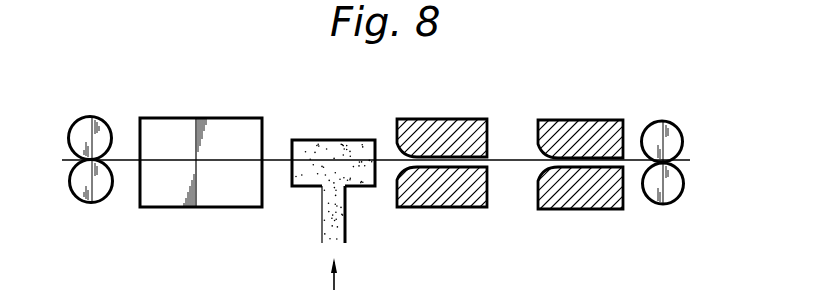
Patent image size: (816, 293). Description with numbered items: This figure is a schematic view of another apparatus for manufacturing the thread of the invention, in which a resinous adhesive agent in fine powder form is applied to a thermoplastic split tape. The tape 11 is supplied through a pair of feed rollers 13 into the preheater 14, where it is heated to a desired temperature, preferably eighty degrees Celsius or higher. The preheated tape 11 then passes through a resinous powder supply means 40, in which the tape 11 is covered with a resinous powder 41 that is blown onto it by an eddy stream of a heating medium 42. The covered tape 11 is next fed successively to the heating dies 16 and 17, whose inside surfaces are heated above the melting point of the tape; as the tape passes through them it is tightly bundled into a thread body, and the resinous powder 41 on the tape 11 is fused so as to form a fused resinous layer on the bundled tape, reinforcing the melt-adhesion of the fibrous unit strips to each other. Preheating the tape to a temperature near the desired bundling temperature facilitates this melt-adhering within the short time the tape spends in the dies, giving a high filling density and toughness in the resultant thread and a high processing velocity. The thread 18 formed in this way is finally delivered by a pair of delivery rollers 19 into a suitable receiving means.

The thermoplastic split tape 11 is at (68, 160).
The feed rollers 13 is at (88, 117).
The preheater 14 is at (220, 127).
The heating die 16 is at (442, 127).
The heating die 17 is at (587, 122).
The thread 18 is at (685, 172).
The delivery rollers 19 is at (655, 123).
The resinous powder supply means 40 is at (332, 138).
The resinous powder 41 is at (338, 213).
The heating medium 42 is at (334, 290).